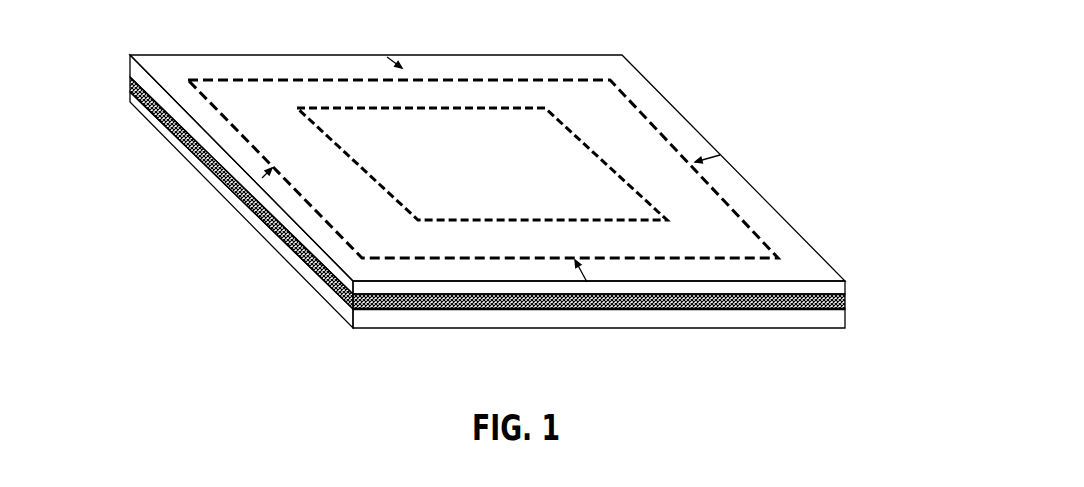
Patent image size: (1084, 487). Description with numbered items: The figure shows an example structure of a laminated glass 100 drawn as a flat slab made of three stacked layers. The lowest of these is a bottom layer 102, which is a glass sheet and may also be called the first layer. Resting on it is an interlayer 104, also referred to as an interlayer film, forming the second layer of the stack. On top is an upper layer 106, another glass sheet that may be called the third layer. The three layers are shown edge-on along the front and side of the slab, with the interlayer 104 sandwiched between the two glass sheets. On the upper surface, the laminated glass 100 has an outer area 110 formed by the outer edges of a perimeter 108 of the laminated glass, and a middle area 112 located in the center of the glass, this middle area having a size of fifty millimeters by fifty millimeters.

The laminated glass 100 is at (118, 42).
The bottom layer 102 is at (855, 329).
The interlayer 104 is at (856, 305).
The upper layer 106 is at (857, 281).
The perimeter 108 is at (708, 135).
The outer area 110 is at (745, 203).
The middle area 112 is at (482, 160).